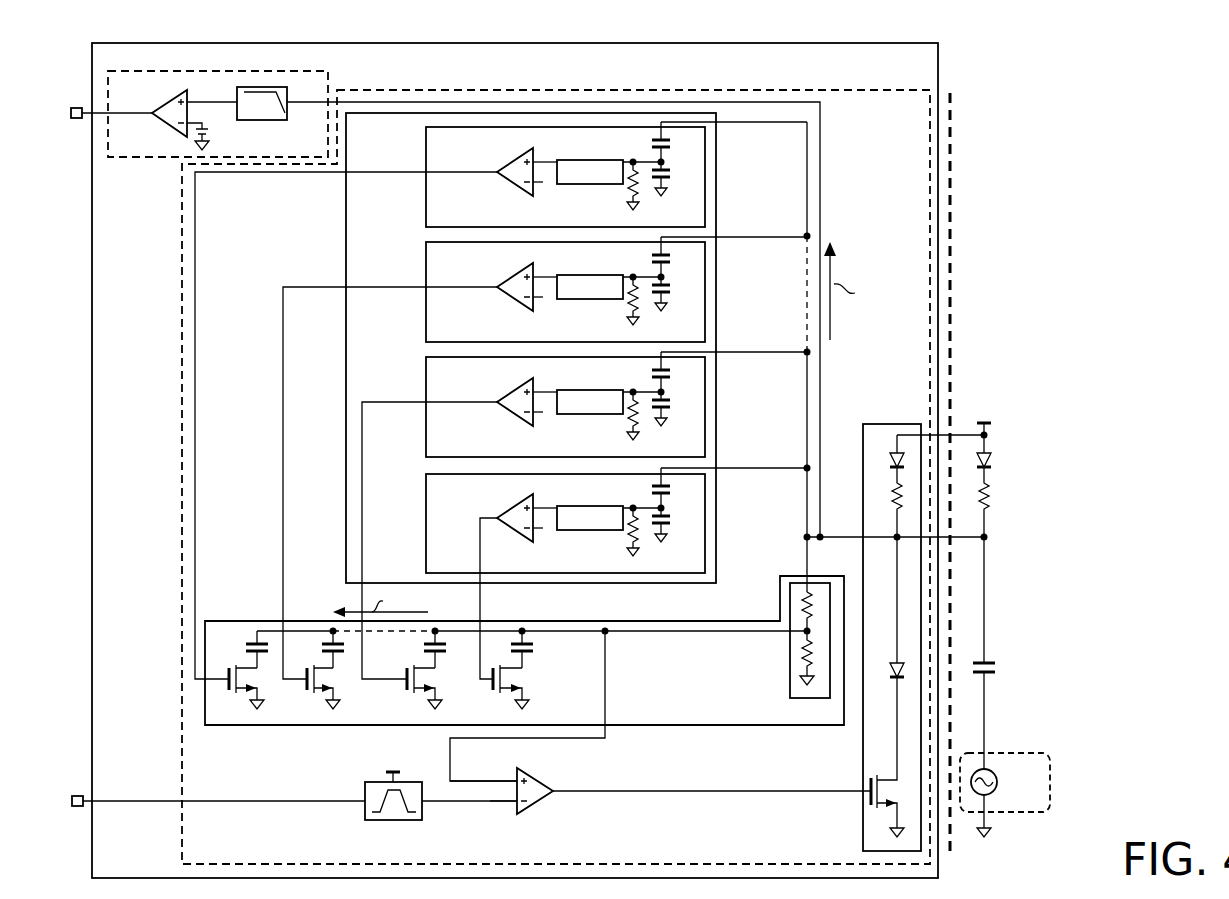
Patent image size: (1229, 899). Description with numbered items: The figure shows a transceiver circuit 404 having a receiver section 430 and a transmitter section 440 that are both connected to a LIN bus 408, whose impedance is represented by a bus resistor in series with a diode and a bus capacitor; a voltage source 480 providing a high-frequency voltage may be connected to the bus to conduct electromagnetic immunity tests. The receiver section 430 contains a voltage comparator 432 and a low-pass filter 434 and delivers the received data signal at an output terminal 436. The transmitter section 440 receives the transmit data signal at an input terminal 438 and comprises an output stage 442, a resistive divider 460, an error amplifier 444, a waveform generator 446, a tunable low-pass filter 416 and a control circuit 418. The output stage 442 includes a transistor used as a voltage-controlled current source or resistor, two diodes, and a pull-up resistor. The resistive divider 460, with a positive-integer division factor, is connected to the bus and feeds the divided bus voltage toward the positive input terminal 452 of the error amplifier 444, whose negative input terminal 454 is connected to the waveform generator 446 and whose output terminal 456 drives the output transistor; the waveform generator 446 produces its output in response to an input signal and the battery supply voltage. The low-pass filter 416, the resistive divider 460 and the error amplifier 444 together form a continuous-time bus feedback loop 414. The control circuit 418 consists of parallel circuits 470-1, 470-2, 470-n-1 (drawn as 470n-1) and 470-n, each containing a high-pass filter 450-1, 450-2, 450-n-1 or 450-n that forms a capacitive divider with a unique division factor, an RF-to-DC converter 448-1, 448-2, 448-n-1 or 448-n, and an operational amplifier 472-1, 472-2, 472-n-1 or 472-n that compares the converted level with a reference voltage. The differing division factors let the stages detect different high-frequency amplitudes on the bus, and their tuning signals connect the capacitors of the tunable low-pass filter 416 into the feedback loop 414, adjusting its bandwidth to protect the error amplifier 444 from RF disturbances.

The transceiver circuit 404 is at (92, 497).
The LIN bus 408 is at (985, 823).
The continuous-time bus feedback loop 414 is at (607, 739).
The tunable low-pass filter 416 is at (240, 621).
The control circuit 418 is at (346, 212).
The receiver section 430 is at (153, 157).
The voltage comparator 432 is at (166, 100).
The low-pass filter 434 is at (287, 113).
The output terminal 436 is at (76, 118).
The input terminal 438 is at (77, 796).
The transmitter section 440 is at (184, 755).
The output stage 442 is at (863, 828).
The error amplifier 444 is at (660, 792).
The waveform generator 446 is at (365, 785).
The RF-to-DC converter 448-n is at (590, 184).
The RF-to-DC converter 448-n-1 is at (590, 299).
The RF-to-DC converter 448-2 is at (590, 414).
The RF-to-DC converter 448-1 is at (590, 530).
The high-pass filter 450-n is at (676, 162).
The high-pass filter 450-n-1 is at (676, 277).
The high-pass filter 450-2 is at (676, 392).
The high-pass filter 450-1 is at (676, 508).
The positive input terminal 452 is at (517, 773).
The negative input terminal 454 is at (517, 808).
The output terminal 456 is at (553, 791).
The resistive divider 460 is at (790, 665).
The parallel circuit 470-n is at (501, 400).
The parallel circuit 470-n-1 is at (545, 453).
The parallel circuit 470n-1 is at (545, 453).
The parallel circuit 470-2 is at (579, 510).
The parallel circuit 470-1 is at (579, 566).
The operational amplifier 472-n is at (507, 179).
The operational amplifier 472-n-1 is at (507, 294).
The operational amplifier 472-2 is at (507, 409).
The operational amplifier 472-1 is at (507, 525).
The voltage source 480 is at (993, 770).